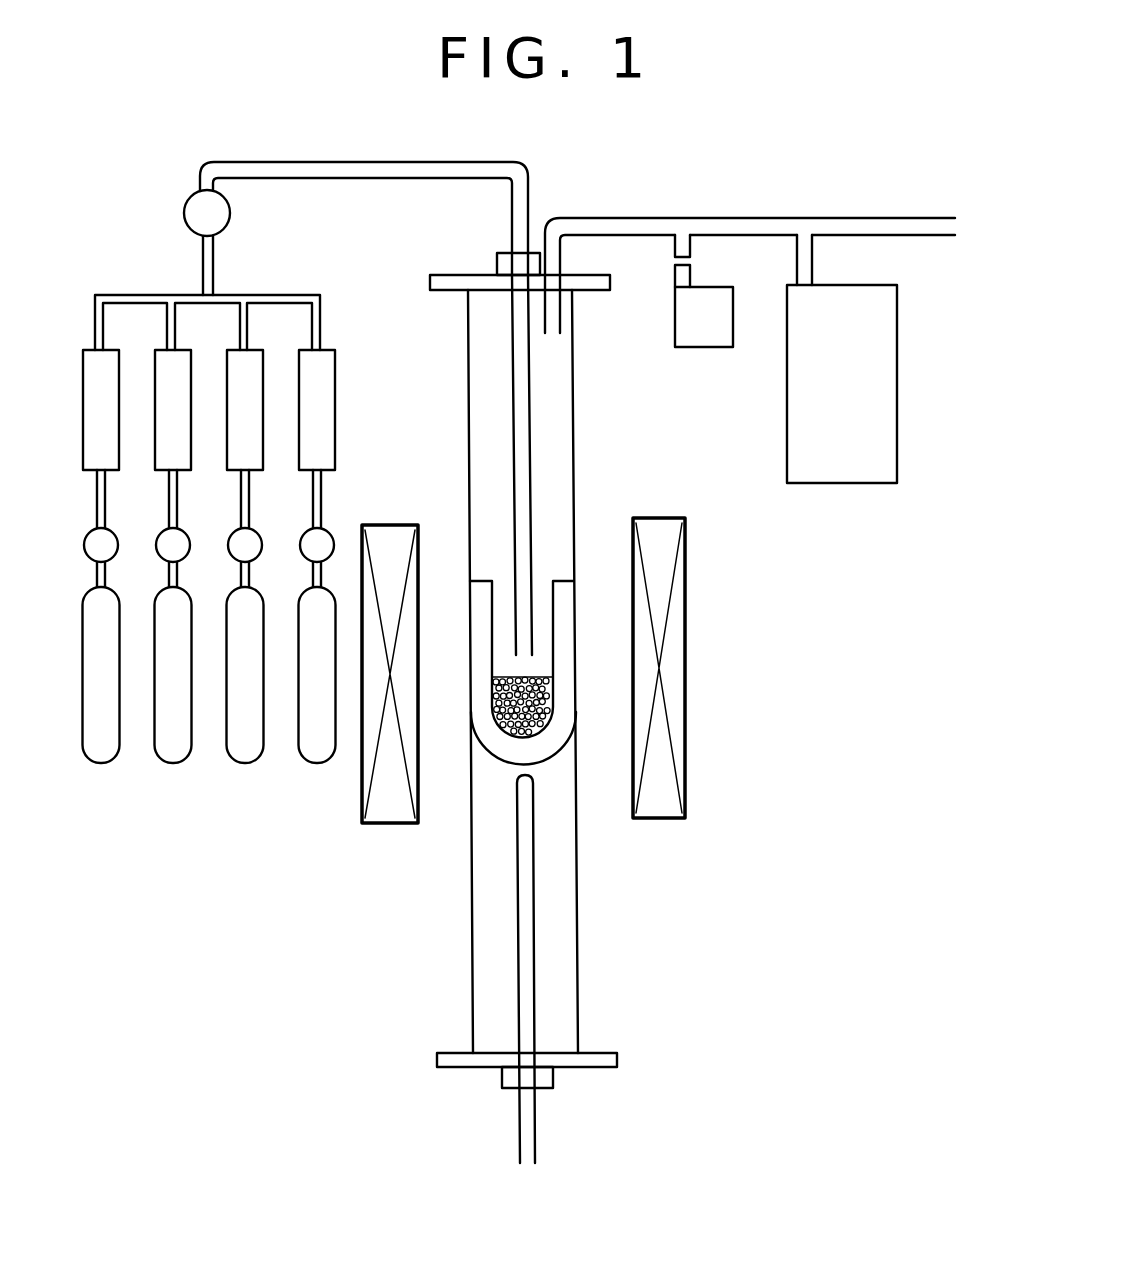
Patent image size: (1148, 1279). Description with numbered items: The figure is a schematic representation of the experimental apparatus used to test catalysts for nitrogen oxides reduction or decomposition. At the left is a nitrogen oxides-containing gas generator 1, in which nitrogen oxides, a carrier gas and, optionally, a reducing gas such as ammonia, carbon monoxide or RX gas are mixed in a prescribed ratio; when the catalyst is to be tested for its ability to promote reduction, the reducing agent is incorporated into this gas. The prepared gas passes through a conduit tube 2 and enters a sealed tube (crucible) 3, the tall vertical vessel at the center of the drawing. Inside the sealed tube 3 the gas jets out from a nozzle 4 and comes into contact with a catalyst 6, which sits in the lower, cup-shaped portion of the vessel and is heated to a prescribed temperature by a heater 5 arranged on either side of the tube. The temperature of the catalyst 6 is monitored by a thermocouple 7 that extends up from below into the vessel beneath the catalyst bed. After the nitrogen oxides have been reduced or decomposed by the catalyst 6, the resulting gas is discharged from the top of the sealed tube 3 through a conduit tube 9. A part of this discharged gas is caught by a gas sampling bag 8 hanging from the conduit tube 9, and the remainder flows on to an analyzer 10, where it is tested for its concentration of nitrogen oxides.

The nitrogen oxides-containing gas generator 1 is at (238, 779).
The conduit tube 2 is at (362, 170).
The sealed tube (crucible) 3 is at (555, 392).
The nozzle 4 is at (538, 502).
The heater 5 is at (673, 698).
The catalyst 6 is at (542, 733).
The thermocouple 7 is at (523, 920).
The gas sampling bag 8 is at (712, 294).
The conduit tube 9 is at (652, 225).
The analyzer 10 is at (867, 396).